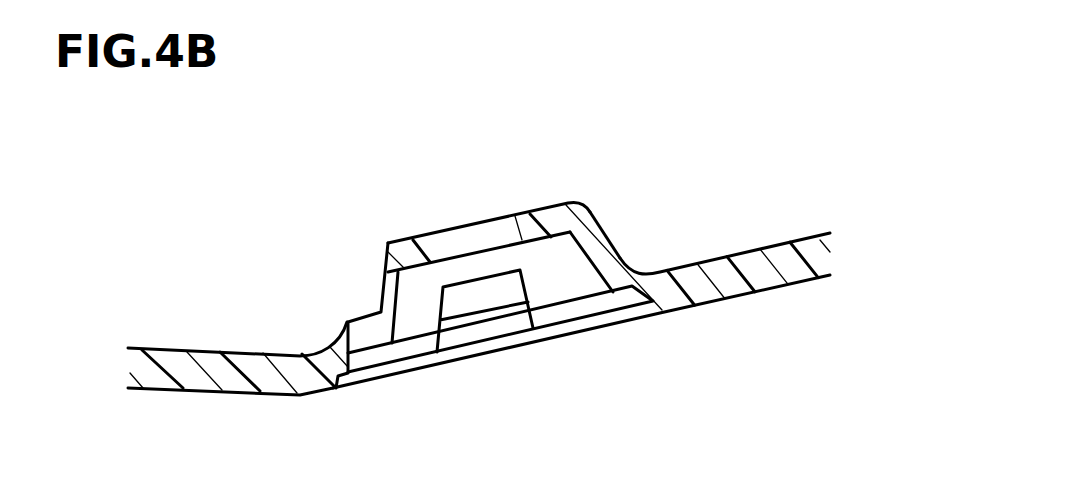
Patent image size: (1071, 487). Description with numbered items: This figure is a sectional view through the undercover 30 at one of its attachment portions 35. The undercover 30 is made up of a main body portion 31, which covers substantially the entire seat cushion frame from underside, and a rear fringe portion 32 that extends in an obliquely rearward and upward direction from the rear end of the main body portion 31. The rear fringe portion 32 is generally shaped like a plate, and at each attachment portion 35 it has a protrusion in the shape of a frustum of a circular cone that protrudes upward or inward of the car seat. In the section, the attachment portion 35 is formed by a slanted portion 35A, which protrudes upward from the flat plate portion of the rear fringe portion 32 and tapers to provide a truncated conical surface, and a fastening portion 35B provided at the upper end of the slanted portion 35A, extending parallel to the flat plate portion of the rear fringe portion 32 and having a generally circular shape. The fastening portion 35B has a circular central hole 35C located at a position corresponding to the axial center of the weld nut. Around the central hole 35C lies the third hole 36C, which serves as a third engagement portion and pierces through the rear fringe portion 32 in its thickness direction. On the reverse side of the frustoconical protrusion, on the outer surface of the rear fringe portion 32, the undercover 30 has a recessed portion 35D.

The undercover 30 is at (581, 291).
The main body portion 31 is at (210, 363).
The rear fringe portion 32 is at (750, 262).
The attachment portion 35 is at (518, 248).
The slanted portion 35A is at (607, 236).
The fastening portion 35B is at (523, 220).
The central hole 35C is at (424, 248).
The recessed portion 35D is at (594, 268).
The third hole 36C is at (443, 305).